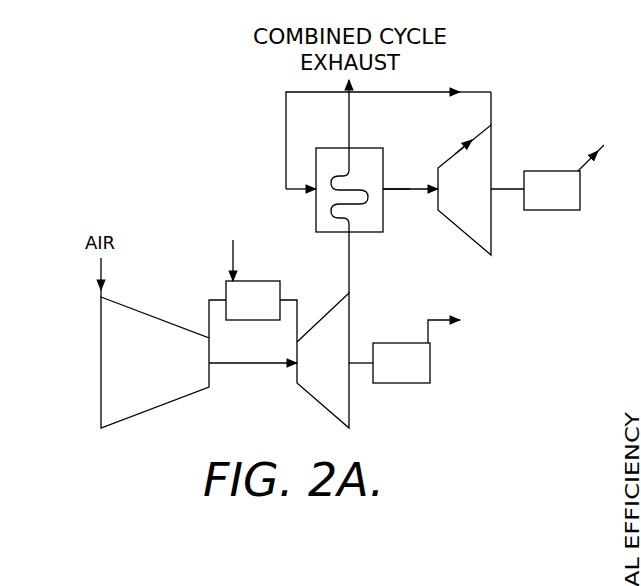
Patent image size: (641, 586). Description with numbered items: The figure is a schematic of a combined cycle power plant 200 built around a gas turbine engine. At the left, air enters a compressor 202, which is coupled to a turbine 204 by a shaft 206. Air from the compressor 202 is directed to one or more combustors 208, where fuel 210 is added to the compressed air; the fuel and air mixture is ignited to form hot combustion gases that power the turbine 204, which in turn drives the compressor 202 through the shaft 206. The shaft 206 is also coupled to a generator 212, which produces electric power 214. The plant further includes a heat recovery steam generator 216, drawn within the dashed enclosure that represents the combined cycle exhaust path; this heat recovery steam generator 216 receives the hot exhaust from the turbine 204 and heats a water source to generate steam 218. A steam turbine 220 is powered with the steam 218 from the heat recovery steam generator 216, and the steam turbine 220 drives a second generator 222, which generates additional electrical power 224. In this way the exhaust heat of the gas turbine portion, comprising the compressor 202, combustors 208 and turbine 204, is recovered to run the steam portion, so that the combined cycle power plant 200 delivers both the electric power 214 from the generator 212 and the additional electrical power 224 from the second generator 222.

The combined cycle power plant 200 is at (118, 93).
The compressor 202 is at (155, 362).
The turbine 204 is at (323, 360).
The shaft 206 is at (256, 364).
The combustors 208 is at (261, 311).
The fuel 210 is at (236, 247).
The generator 212 is at (389, 363).
The electric power 214 is at (466, 327).
The heat recovery steam generator 216 is at (363, 149).
The steam 218 is at (406, 208).
The steam turbine 220 is at (464, 190).
The second generator 222 is at (535, 190).
The additional electrical power 224 is at (604, 146).